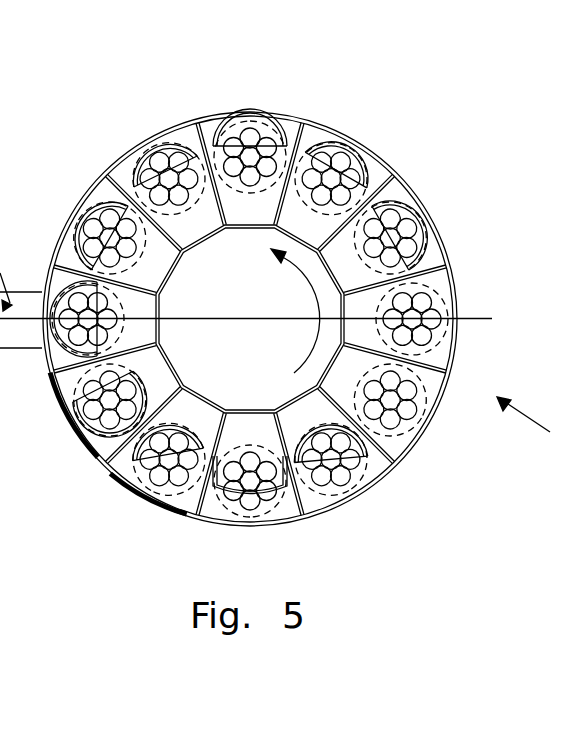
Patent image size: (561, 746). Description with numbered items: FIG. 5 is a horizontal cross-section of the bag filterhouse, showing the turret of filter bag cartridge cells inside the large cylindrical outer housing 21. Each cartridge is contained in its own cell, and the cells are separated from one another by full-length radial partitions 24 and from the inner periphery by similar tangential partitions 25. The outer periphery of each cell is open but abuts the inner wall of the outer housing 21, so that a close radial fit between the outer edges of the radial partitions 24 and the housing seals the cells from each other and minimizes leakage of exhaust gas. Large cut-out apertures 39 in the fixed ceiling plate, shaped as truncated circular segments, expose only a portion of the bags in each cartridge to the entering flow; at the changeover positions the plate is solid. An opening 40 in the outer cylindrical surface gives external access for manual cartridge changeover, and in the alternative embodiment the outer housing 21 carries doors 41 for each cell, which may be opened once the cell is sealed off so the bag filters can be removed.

The outer housing 21 is at (270, 109).
The radial partitions 24 is at (385, 160).
The tangential partitions 25 is at (172, 275).
The cut-out apertures 39 is at (178, 143).
The opening 40 is at (21, 349).
The doors 41 is at (72, 428).